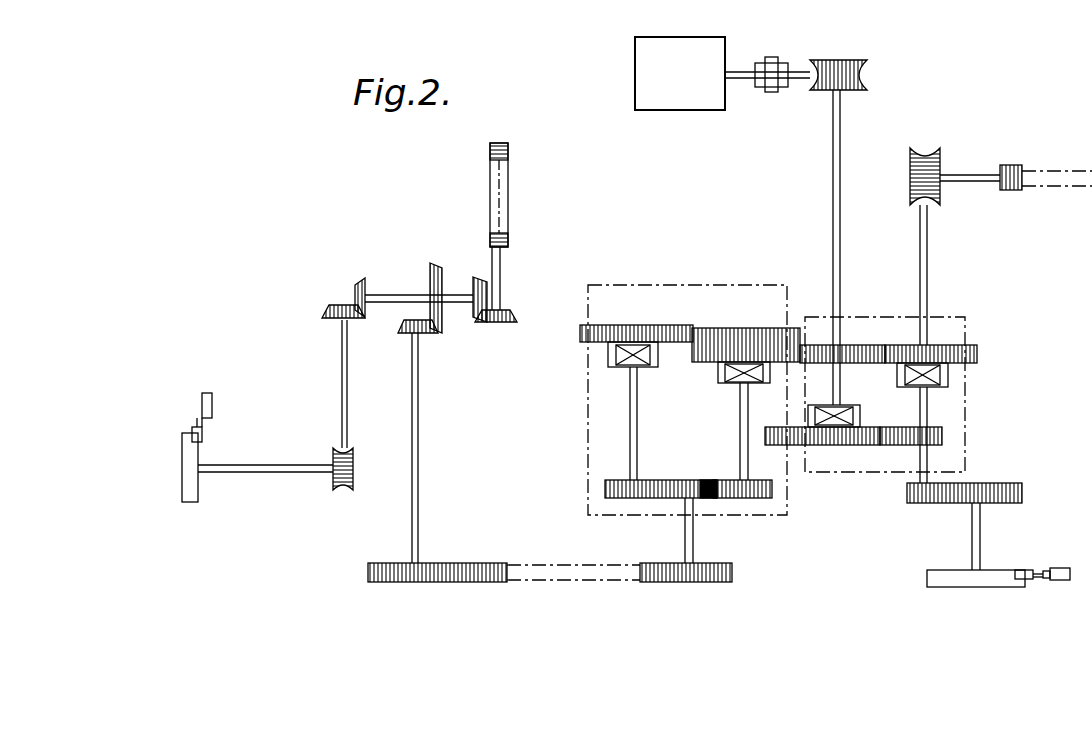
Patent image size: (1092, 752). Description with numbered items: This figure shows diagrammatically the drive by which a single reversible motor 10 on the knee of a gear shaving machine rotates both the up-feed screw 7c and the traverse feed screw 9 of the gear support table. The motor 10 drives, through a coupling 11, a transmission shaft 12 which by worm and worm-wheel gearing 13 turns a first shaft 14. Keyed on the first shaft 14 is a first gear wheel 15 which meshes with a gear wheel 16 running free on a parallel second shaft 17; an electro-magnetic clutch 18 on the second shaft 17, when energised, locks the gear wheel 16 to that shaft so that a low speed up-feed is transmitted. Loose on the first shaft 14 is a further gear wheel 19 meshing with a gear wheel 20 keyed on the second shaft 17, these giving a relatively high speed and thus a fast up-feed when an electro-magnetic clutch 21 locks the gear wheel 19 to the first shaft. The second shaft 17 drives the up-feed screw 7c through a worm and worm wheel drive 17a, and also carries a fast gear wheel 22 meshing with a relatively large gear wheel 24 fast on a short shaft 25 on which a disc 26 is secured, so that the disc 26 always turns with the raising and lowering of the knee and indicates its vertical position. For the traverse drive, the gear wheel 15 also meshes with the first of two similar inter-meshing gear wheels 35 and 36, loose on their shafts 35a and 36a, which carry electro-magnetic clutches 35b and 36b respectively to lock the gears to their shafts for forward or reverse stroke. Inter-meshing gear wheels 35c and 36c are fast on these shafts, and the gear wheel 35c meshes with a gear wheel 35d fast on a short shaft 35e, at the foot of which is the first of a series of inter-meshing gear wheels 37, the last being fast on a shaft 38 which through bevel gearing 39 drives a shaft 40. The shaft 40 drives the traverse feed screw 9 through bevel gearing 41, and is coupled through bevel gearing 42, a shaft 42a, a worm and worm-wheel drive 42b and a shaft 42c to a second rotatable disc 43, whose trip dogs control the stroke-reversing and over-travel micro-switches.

The up-feed screw 7c is at (1025, 170).
The feed screw 9 is at (508, 211).
The reversible motor 10 is at (645, 60).
The coupling 11 is at (768, 92).
The transmission shaft 12 is at (798, 79).
The worm and worm-wheel gearing 13 is at (855, 90).
The first shaft 14 is at (833, 190).
The first gear wheel 15 is at (850, 345).
The gear wheel 16 is at (947, 355).
The second shaft 17 is at (920, 240).
The worm and worm wheel drive 17a is at (915, 176).
The electro-magnetic clutch 18 is at (948, 376).
The gear wheel 19 is at (845, 446).
The gear wheel 20 is at (943, 437).
The electro-magnetic clutch 21 is at (840, 405).
The gear wheel 22 is at (910, 492).
The gear wheel 24 is at (1022, 490).
The short shaft 25 is at (980, 515).
The disc 26 is at (955, 577).
The gear wheel 35 is at (762, 337).
The shaft 35a is at (742, 432).
The electro-magnetic clutch 35b is at (740, 379).
The gear wheel 35c is at (771, 492).
The gear wheel 35d is at (704, 499).
The short shaft 35e is at (685, 535).
The gear wheel 36 is at (655, 333).
The shaft 36a is at (630, 412).
The electro-magnetic clutch 36b is at (612, 352).
The gear wheel 36c is at (607, 490).
The inter-meshing gear wheels 37 is at (404, 582).
The shaft 38 is at (418, 410).
The bevel gearing 39 is at (438, 327).
The shaft 40 is at (398, 297).
The bevel gearing 41 is at (503, 313).
The bevel gearing 42 is at (347, 308).
The shaft 42a is at (342, 355).
The worm and worm-wheel drive 42b is at (343, 491).
The shaft 42c is at (278, 465).
The second rotatable disc 43 is at (186, 495).